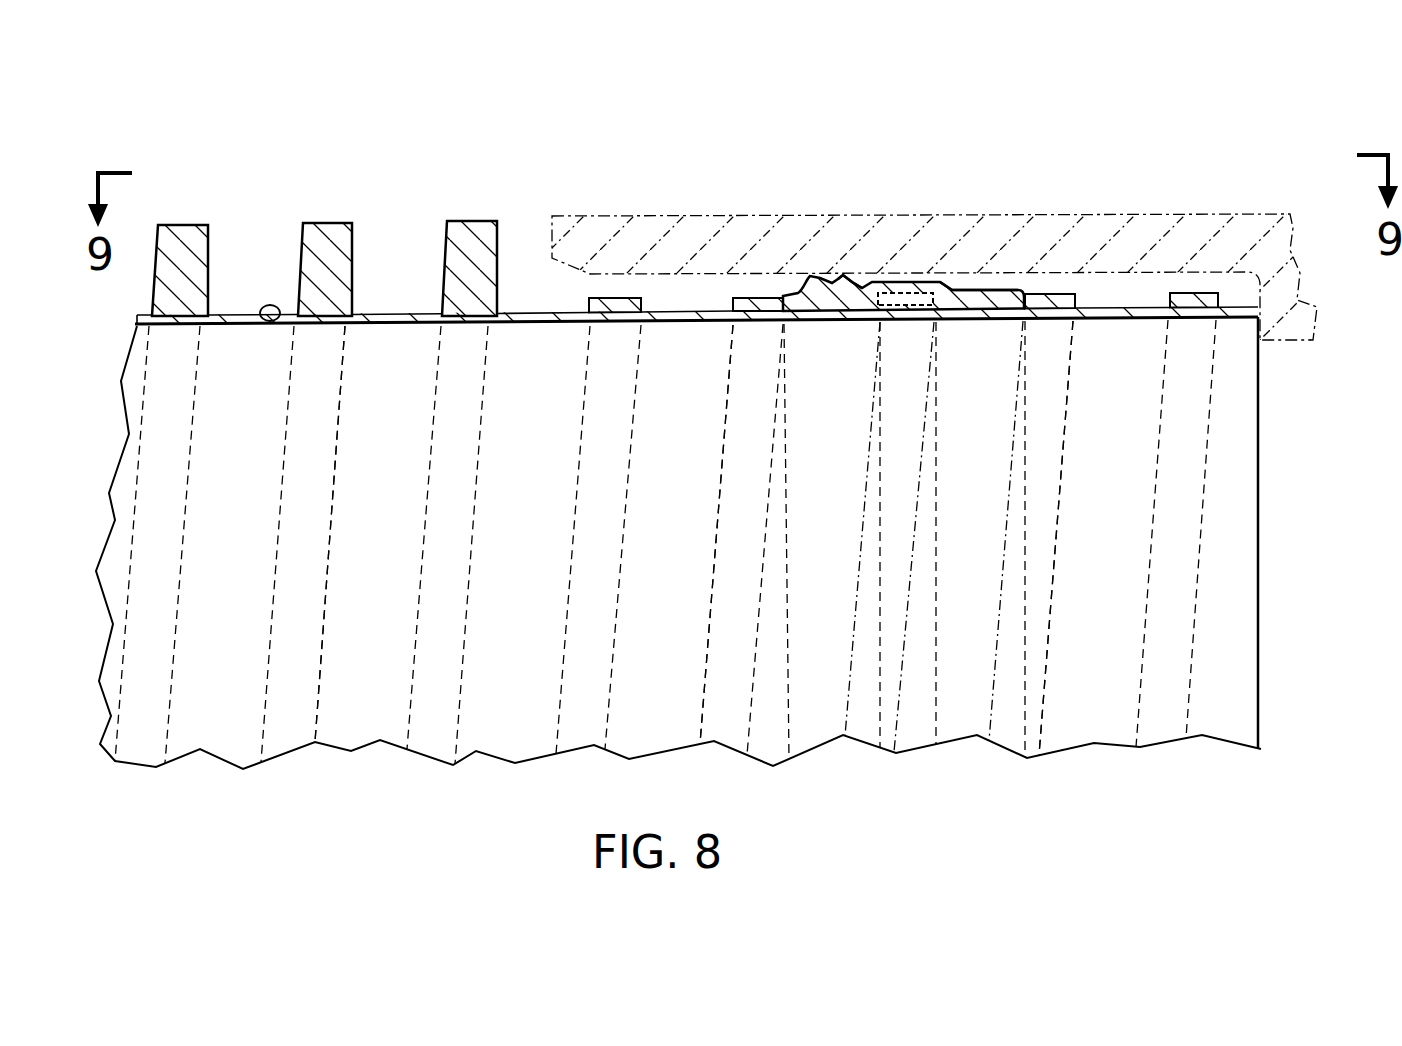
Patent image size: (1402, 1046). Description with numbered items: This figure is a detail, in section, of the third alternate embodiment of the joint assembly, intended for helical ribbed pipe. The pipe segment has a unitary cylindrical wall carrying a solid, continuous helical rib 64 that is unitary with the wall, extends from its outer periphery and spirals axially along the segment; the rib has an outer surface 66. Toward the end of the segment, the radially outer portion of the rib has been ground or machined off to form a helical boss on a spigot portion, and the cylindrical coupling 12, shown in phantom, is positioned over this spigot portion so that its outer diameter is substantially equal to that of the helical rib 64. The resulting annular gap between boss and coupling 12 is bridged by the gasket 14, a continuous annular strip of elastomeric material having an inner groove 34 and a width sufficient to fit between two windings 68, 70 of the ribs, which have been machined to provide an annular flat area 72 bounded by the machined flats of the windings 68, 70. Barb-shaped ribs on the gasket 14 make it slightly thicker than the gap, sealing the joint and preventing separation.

The cylindrical coupling 12 is at (875, 205).
The gasket 14 is at (965, 298).
The inner groove 34 is at (935, 302).
The helical rib 64 is at (483, 257).
The outer surface of helical rib 66 is at (325, 224).
The winding 68 is at (714, 497).
The winding 70 is at (1069, 380).
The annular flat area 72 is at (1025, 500).